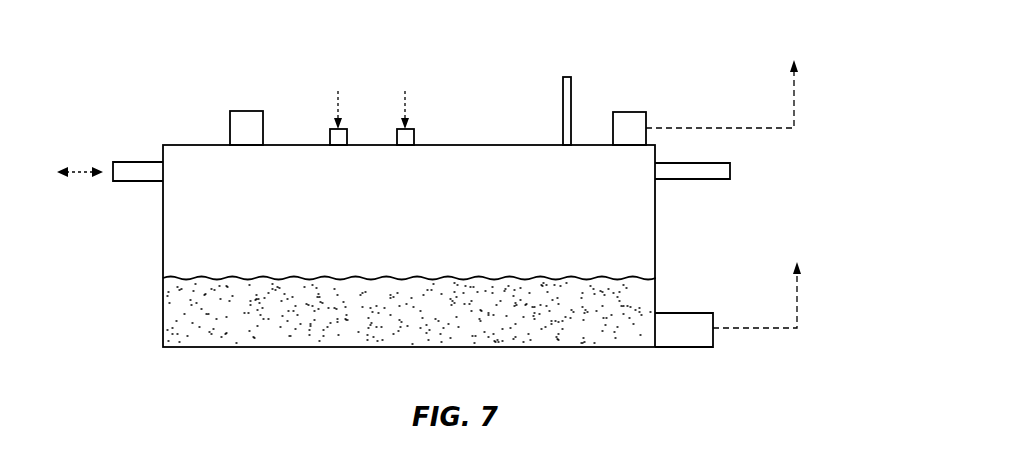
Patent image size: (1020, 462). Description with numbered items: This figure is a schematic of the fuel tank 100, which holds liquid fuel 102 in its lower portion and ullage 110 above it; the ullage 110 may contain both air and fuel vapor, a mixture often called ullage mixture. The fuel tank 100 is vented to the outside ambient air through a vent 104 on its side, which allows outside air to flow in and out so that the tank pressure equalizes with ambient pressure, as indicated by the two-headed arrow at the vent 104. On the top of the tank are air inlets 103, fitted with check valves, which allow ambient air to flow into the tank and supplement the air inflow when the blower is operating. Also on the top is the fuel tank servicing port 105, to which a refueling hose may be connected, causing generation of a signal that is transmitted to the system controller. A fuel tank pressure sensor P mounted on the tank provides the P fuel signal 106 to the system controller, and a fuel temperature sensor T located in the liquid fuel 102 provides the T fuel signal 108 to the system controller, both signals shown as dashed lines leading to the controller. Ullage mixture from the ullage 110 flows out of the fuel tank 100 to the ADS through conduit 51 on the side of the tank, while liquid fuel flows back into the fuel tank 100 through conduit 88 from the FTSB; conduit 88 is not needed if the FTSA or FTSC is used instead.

The fuel tank 100 is at (163, 247).
The liquid fuel 102 is at (409, 311).
The air inlets 103 is at (397, 138).
The vent 104 is at (140, 160).
The fuel tank servicing port 105 is at (244, 110).
The P fuel signal 106 is at (690, 127).
The T fuel signal 108 is at (766, 327).
The ullage 110 is at (411, 214).
The conduit 51 is at (693, 180).
The conduit 88 is at (563, 113).